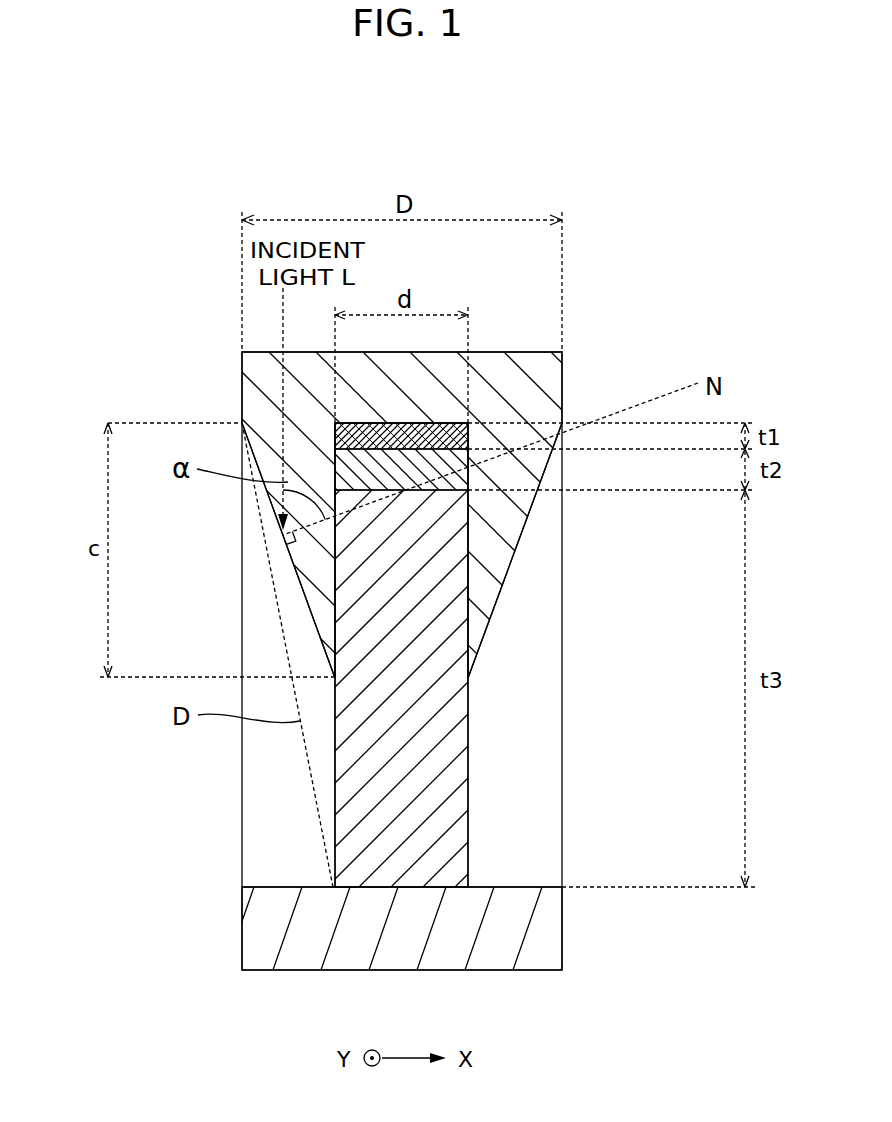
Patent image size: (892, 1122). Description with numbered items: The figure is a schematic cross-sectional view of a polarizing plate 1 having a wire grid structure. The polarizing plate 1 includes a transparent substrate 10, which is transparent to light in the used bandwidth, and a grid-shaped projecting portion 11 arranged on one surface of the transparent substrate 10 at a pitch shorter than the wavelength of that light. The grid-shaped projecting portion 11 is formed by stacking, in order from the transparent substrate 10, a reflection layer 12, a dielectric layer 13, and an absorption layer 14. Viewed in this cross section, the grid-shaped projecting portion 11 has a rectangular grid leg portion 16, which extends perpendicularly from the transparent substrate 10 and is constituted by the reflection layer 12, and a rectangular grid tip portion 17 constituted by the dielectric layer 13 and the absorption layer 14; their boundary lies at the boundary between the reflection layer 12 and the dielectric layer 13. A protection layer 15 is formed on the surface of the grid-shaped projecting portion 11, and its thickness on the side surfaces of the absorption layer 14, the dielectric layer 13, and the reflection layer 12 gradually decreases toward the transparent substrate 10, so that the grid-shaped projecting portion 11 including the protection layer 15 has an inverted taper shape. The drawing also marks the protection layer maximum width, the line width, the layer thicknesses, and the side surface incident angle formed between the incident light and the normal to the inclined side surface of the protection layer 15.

The polarizing plate 1 is at (556, 71).
The transparent substrate 10 is at (540, 950).
The grid-shaped projecting portion 11 is at (598, 200).
The reflection layer 12 is at (455, 751).
The grid leg portion 16 is at (426, 688).
The dielectric layer 13 is at (462, 472).
The absorption layer 14 is at (465, 430).
The protection layer 15 is at (513, 385).
The grid tip portion 17 is at (655, 520).